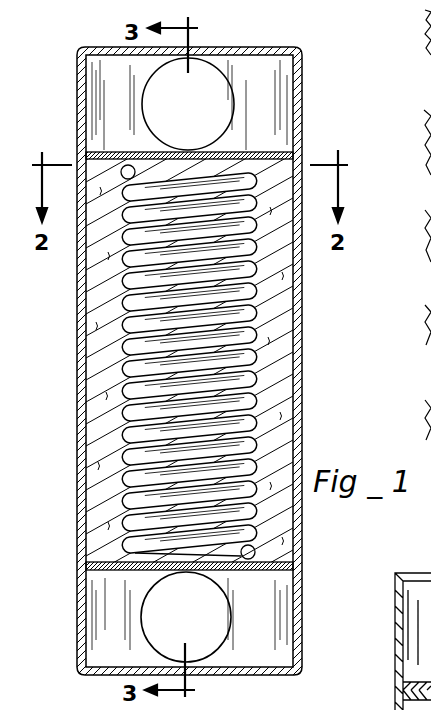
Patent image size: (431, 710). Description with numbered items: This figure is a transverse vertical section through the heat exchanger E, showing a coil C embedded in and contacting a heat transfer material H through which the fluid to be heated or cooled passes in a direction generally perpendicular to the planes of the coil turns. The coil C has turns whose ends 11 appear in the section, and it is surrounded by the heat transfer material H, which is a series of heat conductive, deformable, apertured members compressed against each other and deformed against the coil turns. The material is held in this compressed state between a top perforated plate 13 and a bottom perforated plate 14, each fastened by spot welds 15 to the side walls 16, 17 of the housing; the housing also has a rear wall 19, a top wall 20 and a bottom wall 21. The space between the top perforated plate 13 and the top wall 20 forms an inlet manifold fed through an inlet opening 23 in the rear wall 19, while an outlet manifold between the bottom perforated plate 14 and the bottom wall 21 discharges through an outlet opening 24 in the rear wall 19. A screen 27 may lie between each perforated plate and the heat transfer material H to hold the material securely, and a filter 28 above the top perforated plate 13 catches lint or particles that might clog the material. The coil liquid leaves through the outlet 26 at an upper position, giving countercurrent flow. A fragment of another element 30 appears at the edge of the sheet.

The ends 11 is at (160, 182).
The top perforated plate 13 is at (243, 157).
The bottom perforated plate 14 is at (240, 570).
The spot welds 15 is at (86, 155).
The side wall 16 is at (78, 352).
The side wall 17 is at (300, 353).
The rear wall 19 is at (126, 100).
The top wall 20 is at (237, 47).
The bottom wall 21 is at (238, 675).
The inlet opening 23 is at (143, 95).
The outlet opening 24 is at (141, 600).
The screen 27 is at (304, 158).
The filter 28 is at (256, 553).
The outlet 26 is at (392, 709).
The fin element 30' 30 is at (430, 43).
The heat transfer material H is at (278, 284).
The coil C is at (257, 313).
The heat exchanger E is at (308, 77).